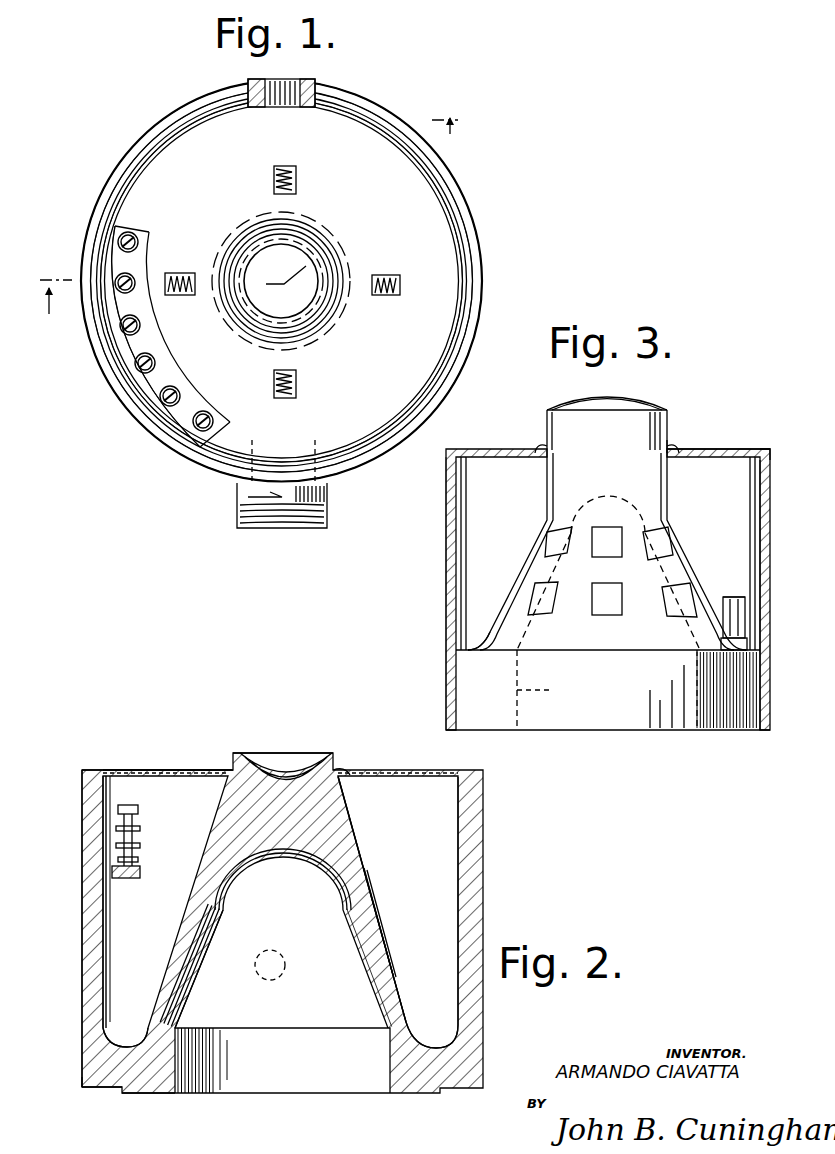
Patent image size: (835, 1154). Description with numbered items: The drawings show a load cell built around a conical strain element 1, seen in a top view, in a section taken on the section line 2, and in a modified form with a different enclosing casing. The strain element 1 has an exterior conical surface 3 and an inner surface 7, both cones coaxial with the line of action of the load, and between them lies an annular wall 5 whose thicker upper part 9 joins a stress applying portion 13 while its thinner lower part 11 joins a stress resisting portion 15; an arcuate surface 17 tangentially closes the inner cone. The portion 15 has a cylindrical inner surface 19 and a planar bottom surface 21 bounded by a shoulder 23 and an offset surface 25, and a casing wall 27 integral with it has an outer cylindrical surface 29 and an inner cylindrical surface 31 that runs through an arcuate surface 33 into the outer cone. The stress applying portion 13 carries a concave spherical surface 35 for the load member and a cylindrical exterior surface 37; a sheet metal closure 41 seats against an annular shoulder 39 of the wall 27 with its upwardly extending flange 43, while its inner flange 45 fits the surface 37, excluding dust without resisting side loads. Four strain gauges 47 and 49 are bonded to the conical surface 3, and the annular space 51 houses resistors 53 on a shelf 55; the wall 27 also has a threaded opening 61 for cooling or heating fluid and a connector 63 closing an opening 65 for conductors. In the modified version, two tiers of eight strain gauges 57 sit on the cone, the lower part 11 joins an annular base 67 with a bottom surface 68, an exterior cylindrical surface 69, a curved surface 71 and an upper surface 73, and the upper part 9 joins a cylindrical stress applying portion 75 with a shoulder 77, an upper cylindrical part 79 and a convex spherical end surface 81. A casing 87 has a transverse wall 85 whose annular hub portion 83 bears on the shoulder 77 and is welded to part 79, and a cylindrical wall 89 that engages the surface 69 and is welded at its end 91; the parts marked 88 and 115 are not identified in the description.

In FIG. 1, the strain element 1 is at (427, 202).
In FIG. 3, the strain element 1 is at (719, 572).
In FIG. 2, the strain element 1 is at (360, 860).
In FIG. 1, the section line 2 is at (255, 224).
In FIG. 1, the exterior conical surface 3 is at (420, 300).
In FIG. 3, the exterior conical surface 3 is at (700, 556).
In FIG. 2, the exterior conical surface 3 is at (353, 830).
In FIG. 3, the annular wall 5 is at (518, 574).
In FIG. 2, the annular wall 5 is at (192, 916).
In FIG. 3, the inner surface 7 is at (541, 626).
In FIG. 2, the inner surface 7 is at (207, 945).
In FIG. 3, the upper part 9 is at (535, 521).
In FIG. 2, the upper part 9 is at (202, 880).
In FIG. 3, the lower part 11 is at (748, 612).
In FIG. 2, the lower part 11 is at (172, 1006).
In FIG. 2, the stress applying portion 13 is at (236, 800).
In FIG. 2, the stress resisting portion 15 is at (138, 1093).
In FIG. 3, the arcuate surface 17 is at (595, 507).
In FIG. 2, the arcuate surface 17 is at (262, 884).
In FIG. 3, the inner surface 19 is at (552, 692).
In FIG. 2, the inner surface 19 is at (190, 1090).
In FIG. 2, the bottom surface 21 is at (123, 1095).
In FIG. 2, the shoulder 23 is at (104, 1090).
In FIG. 2, the offset surface 25 is at (88, 1084).
In FIG. 1, the casing wall 27 is at (81, 237).
In FIG. 2, the casing wall 27 is at (82, 951).
In FIG. 1, the outer cylindrical surface 29 is at (96, 192).
In FIG. 2, the outer cylindrical surface 29 is at (103, 893).
In FIG. 1, the inner cylindrical surface 31 is at (152, 192).
In FIG. 2, the inner cylindrical surface 31 is at (108, 921).
In FIG. 2, the arcuate surface 33 is at (118, 1041).
In FIG. 1, the concave surface 35 is at (318, 258).
In FIG. 2, the concave surface 35 is at (300, 760).
In FIG. 2, the cylindrical exterior surface 37 is at (350, 778).
In FIG. 2, the annular shoulder 39 is at (128, 800).
In FIG. 2, the closure 41 is at (122, 771).
In FIG. 2, the upwardly extending flange 43 is at (108, 768).
In FIG. 2, the inner flange 45 is at (226, 762).
In FIG. 1, the strain gauge 47 is at (185, 273).
In FIG. 2, the strain gauge 47 is at (180, 942).
In FIG. 1, the strain gauge 49 is at (297, 175).
In FIG. 2, the annular space 51 is at (435, 843).
In FIG. 1, the resistors 53 is at (137, 279).
In FIG. 2, the resistors 53 is at (141, 846).
In FIG. 1, the shelf 55 is at (145, 338).
In FIG. 2, the shelf 55 is at (116, 872).
In FIG. 3, the strain gauges 57 is at (540, 541).
In FIG. 1, the threaded opening 61 is at (270, 108).
In FIG. 2, the threaded opening 61 is at (286, 964).
In FIG. 1, the connector 63 is at (328, 502).
In FIG. 1, the opening 65 is at (252, 446).
In FIG. 3, the stress resisting base portion 67 is at (510, 730).
In FIG. 3, the bottom surface 68 is at (716, 730).
In FIG. 3, the exterior cylindrical surface 69 is at (447, 675).
In FIG. 3, the curved surface 71 is at (486, 650).
In FIG. 3, the upper surface 73 is at (612, 647).
In FIG. 3, the stress applying portion 75 is at (546, 479).
In FIG. 3, the shoulder 77 is at (545, 447).
In FIG. 3, the upper cylindrical part 79 is at (668, 416).
In FIG. 3, the convex spherical end surface 81 is at (618, 398).
In FIG. 3, the annular hub portion 83 is at (672, 448).
In FIG. 3, the transverse wall 85 is at (712, 450).
In FIG. 3, the casing 87 is at (770, 482).
In FIG. 3, the top corner 88 is at (752, 452).
In FIG. 3, the cylindrical wall 89 is at (768, 522).
In FIG. 3, the end 91 is at (447, 722).
In FIG. 3, the contact block 115 is at (738, 598).